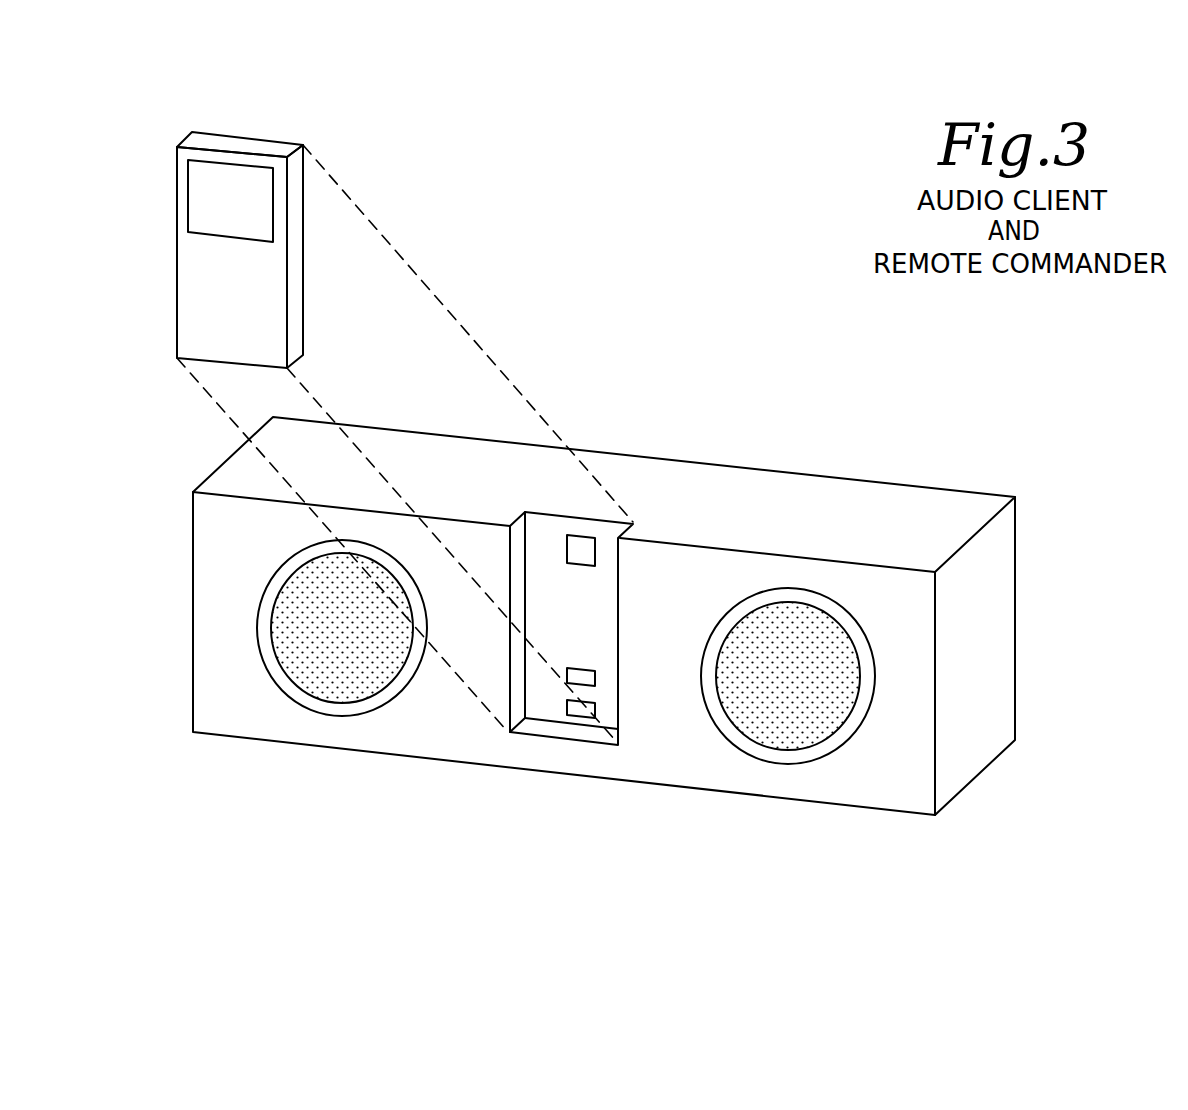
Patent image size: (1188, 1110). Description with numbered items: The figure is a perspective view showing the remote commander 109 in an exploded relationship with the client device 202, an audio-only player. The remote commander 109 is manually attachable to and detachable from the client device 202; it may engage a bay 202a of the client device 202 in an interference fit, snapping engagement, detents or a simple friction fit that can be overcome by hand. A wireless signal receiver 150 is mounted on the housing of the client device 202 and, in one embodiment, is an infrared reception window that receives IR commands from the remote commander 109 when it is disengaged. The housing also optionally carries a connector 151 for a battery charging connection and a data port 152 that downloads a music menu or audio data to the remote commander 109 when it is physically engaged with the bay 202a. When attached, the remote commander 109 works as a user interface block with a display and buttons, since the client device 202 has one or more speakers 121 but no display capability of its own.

The remote commander 109 is at (255, 138).
The speakers 121 is at (318, 690).
The wireless signal receiver 150 is at (578, 543).
The connector 151 is at (570, 712).
The data port 152 is at (590, 680).
The client device 202 is at (967, 518).
The bay 202a is at (598, 592).